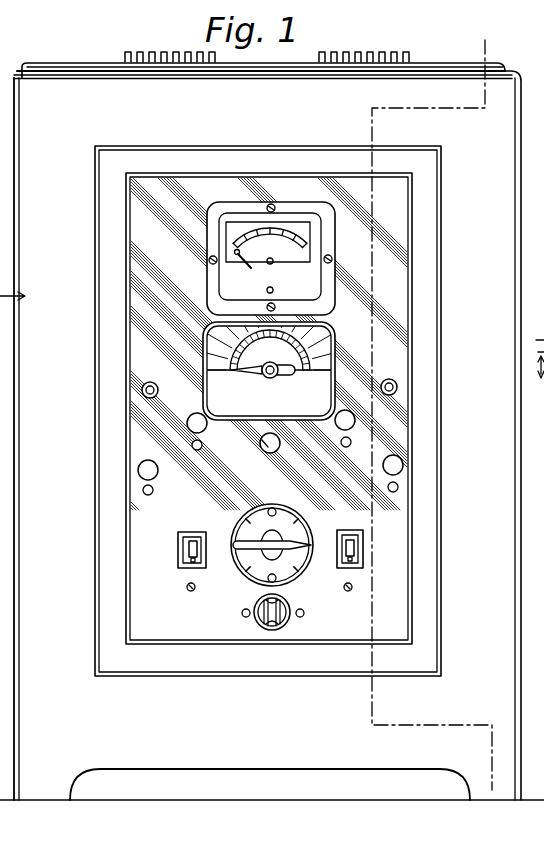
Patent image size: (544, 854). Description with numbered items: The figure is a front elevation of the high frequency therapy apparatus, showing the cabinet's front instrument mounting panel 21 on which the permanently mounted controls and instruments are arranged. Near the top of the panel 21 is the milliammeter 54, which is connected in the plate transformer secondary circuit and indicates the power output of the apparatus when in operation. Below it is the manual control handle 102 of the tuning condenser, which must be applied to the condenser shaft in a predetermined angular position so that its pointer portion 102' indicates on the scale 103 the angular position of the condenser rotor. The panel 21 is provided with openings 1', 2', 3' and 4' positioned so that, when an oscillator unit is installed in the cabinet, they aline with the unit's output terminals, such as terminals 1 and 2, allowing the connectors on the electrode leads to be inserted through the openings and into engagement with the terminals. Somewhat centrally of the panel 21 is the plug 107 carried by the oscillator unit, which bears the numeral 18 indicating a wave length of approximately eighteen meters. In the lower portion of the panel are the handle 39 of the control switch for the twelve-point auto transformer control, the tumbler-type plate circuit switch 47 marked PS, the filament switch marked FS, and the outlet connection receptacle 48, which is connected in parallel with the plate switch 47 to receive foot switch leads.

The output terminal 1 is at (264, 391).
The panel opening 1' is at (185, 431).
The output terminal 2 is at (454, 408).
The panel opening 2' is at (357, 428).
The panel opening 3' is at (166, 477).
The panel opening 4' is at (372, 473).
The wave length numeral 18 is at (270, 443).
The front instrument mounting panel 21 is at (395, 289).
The control switch handle 39 is at (300, 541).
The plate circuit switch 47 is at (276, 559).
The outlet connection receptacle 48 is at (282, 631).
The milliammeter 54 is at (318, 277).
The manual control handle 102 is at (270, 355).
The pointer portion 102' is at (240, 384).
The scale 103 is at (298, 380).
The plug 107 is at (262, 440).
The filament switch FS is at (197, 568).
The plate switch PS is at (364, 565).